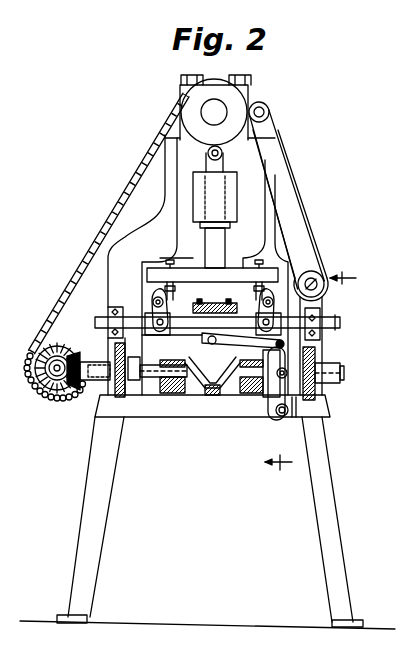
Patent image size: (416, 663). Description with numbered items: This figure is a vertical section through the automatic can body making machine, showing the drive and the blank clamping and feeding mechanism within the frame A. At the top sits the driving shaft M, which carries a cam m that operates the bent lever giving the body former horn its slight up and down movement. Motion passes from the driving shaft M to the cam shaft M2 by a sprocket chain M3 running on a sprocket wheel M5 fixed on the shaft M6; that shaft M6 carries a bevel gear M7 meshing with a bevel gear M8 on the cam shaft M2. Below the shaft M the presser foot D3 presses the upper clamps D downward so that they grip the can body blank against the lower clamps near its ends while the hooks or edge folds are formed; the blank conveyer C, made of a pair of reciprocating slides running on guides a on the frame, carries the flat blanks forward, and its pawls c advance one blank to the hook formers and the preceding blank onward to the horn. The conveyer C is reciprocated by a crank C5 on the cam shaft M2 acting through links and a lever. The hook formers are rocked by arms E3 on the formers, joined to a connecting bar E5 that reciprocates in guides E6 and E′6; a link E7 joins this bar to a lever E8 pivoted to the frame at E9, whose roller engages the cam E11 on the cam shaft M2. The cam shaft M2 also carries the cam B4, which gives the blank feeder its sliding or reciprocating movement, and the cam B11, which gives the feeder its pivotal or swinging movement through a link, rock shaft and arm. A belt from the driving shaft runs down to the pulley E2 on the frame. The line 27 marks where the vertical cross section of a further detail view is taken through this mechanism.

The frame A is at (357, 514).
The driving shaft M is at (214, 112).
The cam m is at (250, 98).
The sprocket chain M3 is at (99, 241).
The belt pulley E2 is at (323, 266).
The section line 27— 27 is at (310, 377).
The upper clamp D is at (189, 225).
The presser foot D3 is at (212, 279).
The blank conveyer C is at (191, 302).
The guide a is at (216, 303).
The pawl c is at (199, 300).
The guide E6 is at (322, 316).
The connecting bar E5 is at (340, 325).
The guide E′6 is at (110, 314).
The arm E3 is at (322, 309).
The link E7 is at (238, 343).
The bevel gear M8 is at (56, 348).
The shaft M6 is at (47, 387).
The sprocket wheel M5 is at (27, 361).
The bevel gear M7 is at (71, 401).
The cam B4 is at (130, 380).
The cam shaft M2 is at (157, 374).
The crank C5 is at (212, 397).
The lever E8 is at (270, 408).
The pivot E9 is at (279, 425).
The cam B11 is at (313, 397).
The cam E11 is at (290, 398).